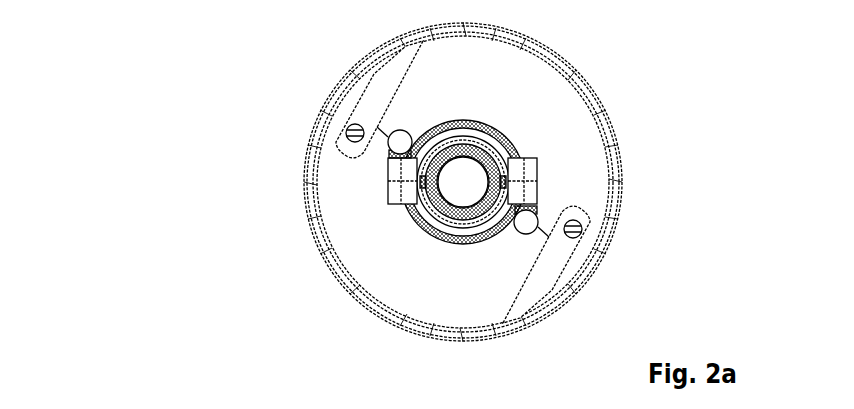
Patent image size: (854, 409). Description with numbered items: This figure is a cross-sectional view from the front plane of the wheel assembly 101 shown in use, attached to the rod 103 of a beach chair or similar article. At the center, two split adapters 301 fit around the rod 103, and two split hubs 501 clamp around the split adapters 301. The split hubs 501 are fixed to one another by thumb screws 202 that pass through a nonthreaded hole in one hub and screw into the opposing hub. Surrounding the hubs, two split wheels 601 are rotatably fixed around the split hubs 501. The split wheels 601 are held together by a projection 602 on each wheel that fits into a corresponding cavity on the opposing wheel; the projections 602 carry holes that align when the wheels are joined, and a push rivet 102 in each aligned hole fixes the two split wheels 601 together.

The wheel assembly 101 is at (422, 174).
The push rivet 102 is at (342, 135).
The rod 103 is at (470, 182).
The thumb screw 202 is at (540, 207).
The split adapter 301 is at (433, 198).
The split hub 501 is at (517, 142).
The split wheel 601 is at (531, 40).
The projection 602 is at (350, 100).